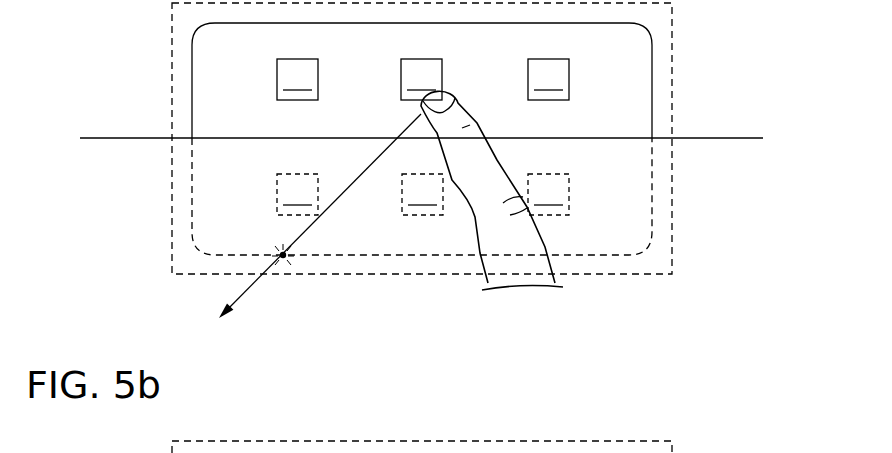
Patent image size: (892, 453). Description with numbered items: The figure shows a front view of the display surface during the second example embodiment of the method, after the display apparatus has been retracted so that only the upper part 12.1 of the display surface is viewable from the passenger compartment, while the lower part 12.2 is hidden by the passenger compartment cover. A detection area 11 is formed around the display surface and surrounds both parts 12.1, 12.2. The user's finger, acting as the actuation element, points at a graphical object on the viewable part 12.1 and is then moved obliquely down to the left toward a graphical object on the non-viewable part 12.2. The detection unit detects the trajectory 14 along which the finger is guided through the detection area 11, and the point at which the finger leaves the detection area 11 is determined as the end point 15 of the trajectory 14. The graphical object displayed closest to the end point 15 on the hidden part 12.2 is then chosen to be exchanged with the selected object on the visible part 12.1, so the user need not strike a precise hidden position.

The detection area 11 is at (172, 79).
The part of the display surface 12.1 is at (621, 75).
The other part of the display surface 12.2 is at (621, 210).
The trajectory 14 is at (333, 203).
The end point 15 is at (283, 259).